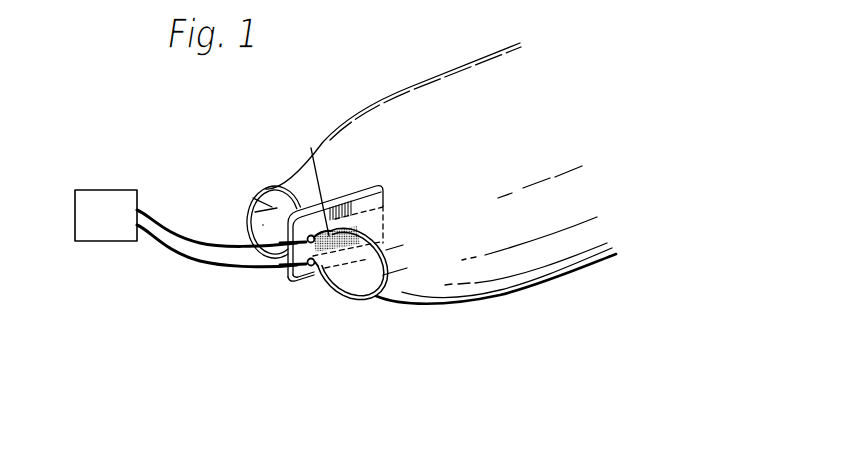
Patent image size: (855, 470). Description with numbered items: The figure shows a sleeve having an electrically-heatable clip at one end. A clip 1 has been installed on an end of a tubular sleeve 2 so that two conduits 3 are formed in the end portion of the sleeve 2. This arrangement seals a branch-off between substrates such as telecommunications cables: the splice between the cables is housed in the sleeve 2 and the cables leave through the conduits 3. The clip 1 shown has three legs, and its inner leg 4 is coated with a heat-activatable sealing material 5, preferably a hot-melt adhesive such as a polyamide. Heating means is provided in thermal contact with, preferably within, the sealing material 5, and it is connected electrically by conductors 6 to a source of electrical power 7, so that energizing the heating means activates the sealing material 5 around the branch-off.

The clip 1 is at (302, 277).
The tubular sleeve 2 is at (538, 259).
The conduits 3 is at (263, 208).
The inner leg 4 is at (396, 205).
The heat-activatable sealing material 5 is at (296, 180).
The conductors 6 is at (200, 266).
The source of electrical power 7 is at (95, 226).